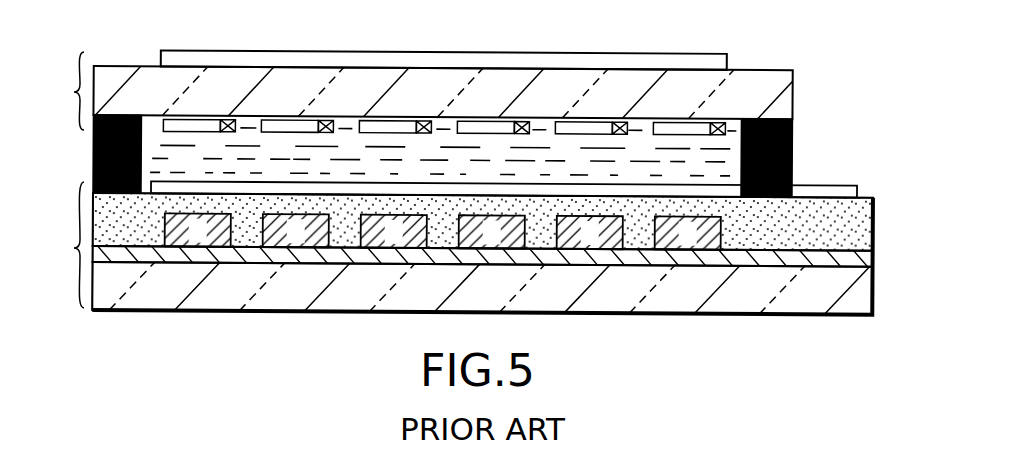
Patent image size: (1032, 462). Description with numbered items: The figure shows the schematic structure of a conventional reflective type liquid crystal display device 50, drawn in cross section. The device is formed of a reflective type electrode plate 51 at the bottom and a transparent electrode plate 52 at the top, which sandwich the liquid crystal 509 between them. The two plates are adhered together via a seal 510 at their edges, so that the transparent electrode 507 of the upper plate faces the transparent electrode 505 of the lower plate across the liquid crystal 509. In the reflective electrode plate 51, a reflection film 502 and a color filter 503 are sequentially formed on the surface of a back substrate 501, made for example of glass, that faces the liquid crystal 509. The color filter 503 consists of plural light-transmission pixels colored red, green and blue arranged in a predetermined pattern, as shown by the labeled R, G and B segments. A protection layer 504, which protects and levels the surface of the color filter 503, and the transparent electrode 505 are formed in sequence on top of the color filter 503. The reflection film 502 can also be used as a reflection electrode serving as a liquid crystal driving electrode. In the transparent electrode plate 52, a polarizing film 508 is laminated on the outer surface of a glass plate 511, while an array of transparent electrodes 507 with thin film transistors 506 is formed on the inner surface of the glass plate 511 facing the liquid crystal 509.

The reflective type liquid crystal display device 50 is at (872, 120).
The reflective type electrode plate 51 is at (64, 245).
The transparent electrode plate 52 is at (63, 91).
The back substrate 501 is at (864, 287).
The reflection film 502 is at (863, 262).
The color filter 503 is at (178, 246).
The protection layer 504 is at (860, 235).
The transparent electrode 505 is at (855, 192).
The TFT 506 is at (716, 119).
The transparent electrode 507 is at (677, 130).
The polarizing film 508 is at (408, 64).
The liquid crystal 509 is at (732, 168).
The seal 510 is at (113, 195).
The glass plate 511 is at (133, 82).